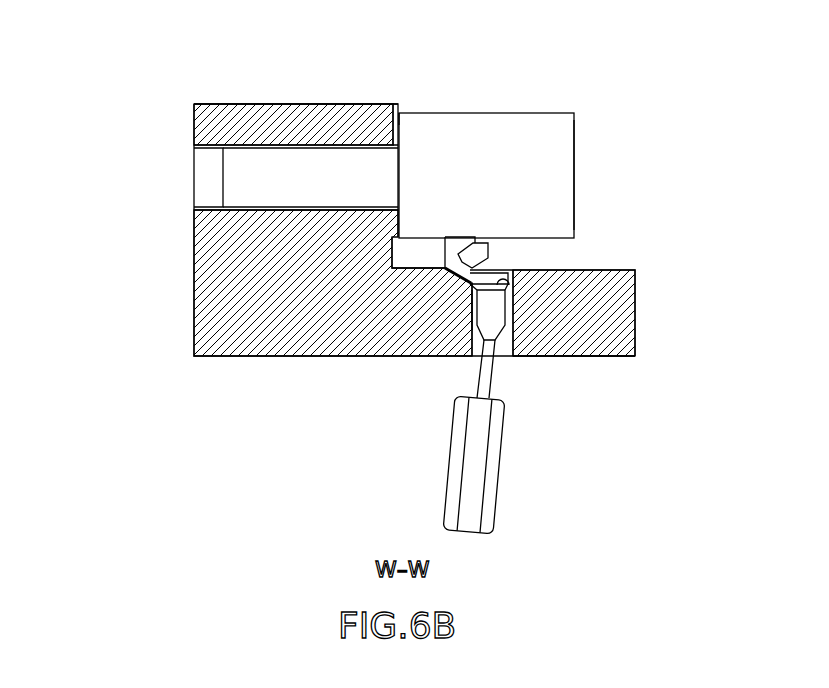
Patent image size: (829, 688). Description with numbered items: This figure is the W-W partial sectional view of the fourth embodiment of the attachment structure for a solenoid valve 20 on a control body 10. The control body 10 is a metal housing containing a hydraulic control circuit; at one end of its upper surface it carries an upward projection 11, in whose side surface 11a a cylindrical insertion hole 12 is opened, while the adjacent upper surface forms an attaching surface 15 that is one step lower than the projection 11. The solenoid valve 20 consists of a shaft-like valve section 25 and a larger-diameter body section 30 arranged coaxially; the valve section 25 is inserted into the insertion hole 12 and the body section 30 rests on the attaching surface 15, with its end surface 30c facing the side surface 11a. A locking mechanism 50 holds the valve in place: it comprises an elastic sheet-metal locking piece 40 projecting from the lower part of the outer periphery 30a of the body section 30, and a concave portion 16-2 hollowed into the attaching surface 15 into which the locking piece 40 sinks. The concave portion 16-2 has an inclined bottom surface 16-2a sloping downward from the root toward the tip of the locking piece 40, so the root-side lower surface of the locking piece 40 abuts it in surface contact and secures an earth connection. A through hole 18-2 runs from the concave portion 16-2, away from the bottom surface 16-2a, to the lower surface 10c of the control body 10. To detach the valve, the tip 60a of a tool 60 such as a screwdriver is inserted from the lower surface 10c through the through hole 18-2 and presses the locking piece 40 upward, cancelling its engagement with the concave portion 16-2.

The control body 10 is at (194, 303).
The lower surface of the control body 10c is at (593, 357).
The projection 11 is at (262, 103).
The side surface of the projection 11a is at (399, 112).
The insertion hole 12 is at (211, 146).
The attaching surface 15 is at (600, 270).
The concave portion 16-2 is at (408, 329).
The bottom surface of the concave portion 16-2a is at (510, 254).
The through hole 18-2 is at (470, 328).
The solenoid valve 20 is at (527, 135).
The valve section 25 is at (312, 150).
The body section 30 is at (556, 127).
The outer periphery of the body section 30a is at (562, 156).
The end surface of the body section 30c is at (402, 108).
The locking piece 40 is at (456, 281).
The locking mechanism 50 is at (428, 421).
The tool 60 is at (579, 406).
The tip of the tool 60a is at (508, 278).